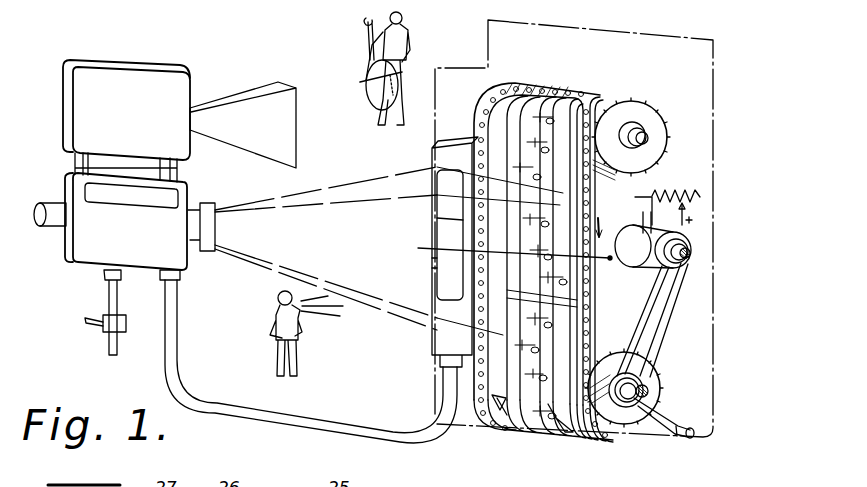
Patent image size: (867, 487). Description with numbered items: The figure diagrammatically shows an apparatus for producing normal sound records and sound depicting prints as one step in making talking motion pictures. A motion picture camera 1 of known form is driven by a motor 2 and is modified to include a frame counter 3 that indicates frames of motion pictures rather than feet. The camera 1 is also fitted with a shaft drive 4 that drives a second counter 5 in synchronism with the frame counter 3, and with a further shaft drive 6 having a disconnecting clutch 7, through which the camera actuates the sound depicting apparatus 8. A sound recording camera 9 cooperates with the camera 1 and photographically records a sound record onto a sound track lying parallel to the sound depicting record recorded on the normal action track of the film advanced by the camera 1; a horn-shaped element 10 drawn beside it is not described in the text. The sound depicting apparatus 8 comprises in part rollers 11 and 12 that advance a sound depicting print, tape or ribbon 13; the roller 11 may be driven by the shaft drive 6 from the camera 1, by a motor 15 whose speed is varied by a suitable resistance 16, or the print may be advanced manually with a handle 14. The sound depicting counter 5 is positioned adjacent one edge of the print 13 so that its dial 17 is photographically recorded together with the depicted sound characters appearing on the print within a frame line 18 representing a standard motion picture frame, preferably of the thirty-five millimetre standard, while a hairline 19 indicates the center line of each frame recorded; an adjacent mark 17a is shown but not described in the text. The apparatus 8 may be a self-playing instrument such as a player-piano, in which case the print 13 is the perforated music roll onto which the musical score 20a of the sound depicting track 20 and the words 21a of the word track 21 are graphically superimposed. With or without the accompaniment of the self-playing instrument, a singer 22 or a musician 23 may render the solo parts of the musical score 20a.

The motion picture camera 1 is at (100, 250).
The motor 2 is at (52, 214).
The frame counter 3 is at (90, 196).
The shaft drive 4 is at (178, 336).
The sound depicting counter 5 is at (432, 343).
The shaft drive 6 is at (110, 290).
The disconnecting clutch 7 is at (109, 328).
The sound depicting apparatus 8 is at (700, 328).
The sound recording camera 9 is at (85, 78).
The loudspeaker horn 10 is at (256, 96).
The roller 11 is at (655, 403).
The roller 12 is at (660, 156).
The sound depicting print 13 is at (590, 300).
The handle 14 is at (681, 440).
The motor 15 is at (690, 254).
The resistance 16 is at (693, 200).
The dial 17 is at (436, 286).
The pointer 17a is at (437, 219).
The frame line 18 is at (432, 262).
The hairline 19 is at (424, 246).
The sound depicting track 20 is at (551, 415).
The musical score 20a is at (562, 425).
The word track 21 is at (503, 412).
The words 21a is at (490, 412).
The singer 22 is at (277, 357).
The musician 23 is at (395, 68).